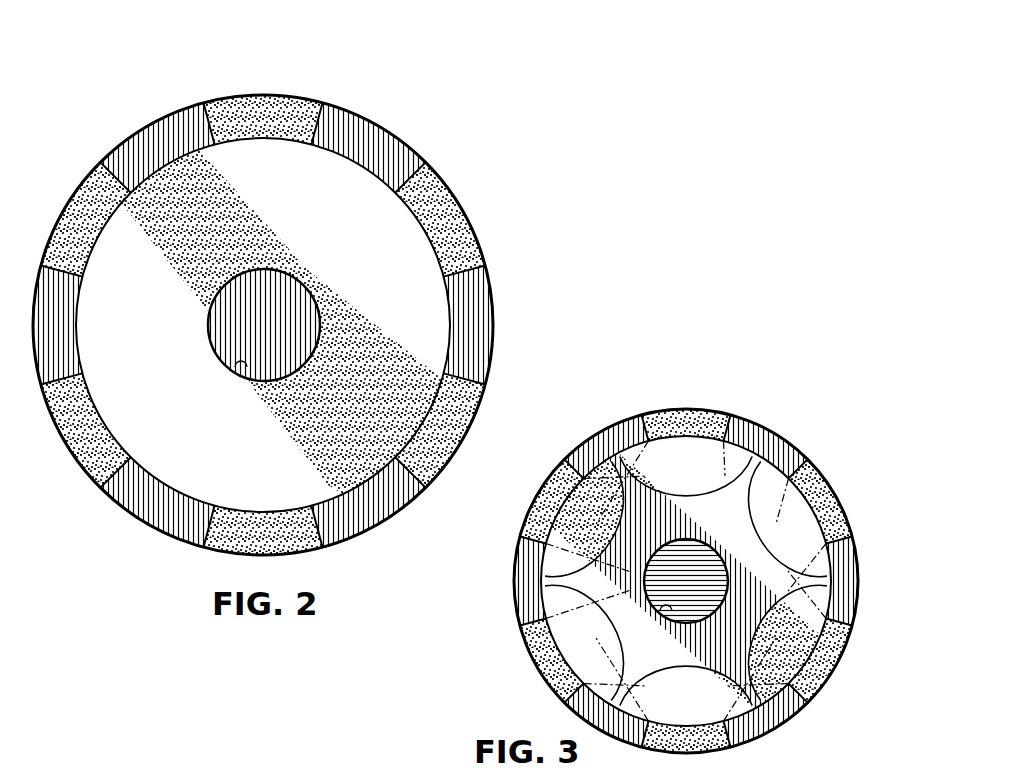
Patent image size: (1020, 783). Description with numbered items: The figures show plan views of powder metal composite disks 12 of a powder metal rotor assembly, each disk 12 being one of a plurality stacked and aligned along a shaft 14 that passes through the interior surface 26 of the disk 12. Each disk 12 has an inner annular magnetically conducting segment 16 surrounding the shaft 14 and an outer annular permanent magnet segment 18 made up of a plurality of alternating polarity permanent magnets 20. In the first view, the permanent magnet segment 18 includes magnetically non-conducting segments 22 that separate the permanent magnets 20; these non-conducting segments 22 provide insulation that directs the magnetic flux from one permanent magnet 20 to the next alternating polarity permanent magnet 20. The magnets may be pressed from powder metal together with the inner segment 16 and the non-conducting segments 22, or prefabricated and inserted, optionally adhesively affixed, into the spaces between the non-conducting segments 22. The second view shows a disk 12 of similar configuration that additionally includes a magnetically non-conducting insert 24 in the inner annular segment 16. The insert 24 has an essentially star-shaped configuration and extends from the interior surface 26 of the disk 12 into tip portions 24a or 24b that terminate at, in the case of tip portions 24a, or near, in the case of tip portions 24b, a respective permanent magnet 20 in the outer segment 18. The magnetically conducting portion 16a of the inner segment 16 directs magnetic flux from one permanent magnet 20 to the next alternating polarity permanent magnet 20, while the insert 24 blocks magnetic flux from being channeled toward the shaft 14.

In FIG. 2, the powder metal composite disk 12 is at (510, 395).
In FIG. 3, the powder metal composite disk 12 is at (674, 559).
In FIG. 2, the shaft 14 is at (269, 330).
In FIG. 3, the shaft 14 is at (704, 591).
In FIG. 2, the inner annular magnetically conducting segment 16 is at (153, 330).
In FIG. 3, the inner annular magnetically conducting segment 16 is at (775, 456).
In FIG. 3, the magnetically conducting portion 16a is at (692, 478).
In FIG. 2, the outer annular permanent magnet segment 18 is at (436, 166).
In FIG. 3, the outer annular permanent magnet segment 18 is at (746, 410).
In FIG. 2, the permanent magnet 20 is at (276, 99).
In FIG. 3, the permanent magnet 20 is at (682, 404).
In FIG. 2, the magnetically non-conducting segment 22 is at (142, 125).
In FIG. 3, the magnetically non-conducting segment 22 is at (830, 553).
In FIG. 3, the magnetically non-conducting insert 24 is at (734, 521).
In FIG. 3, the tip portion 24a is at (598, 450).
In FIG. 3, the tip portion 24b is at (831, 526).
In FIG. 2, the interior surface 26 is at (232, 362).
In FIG. 3, the interior surface 26 is at (655, 604).